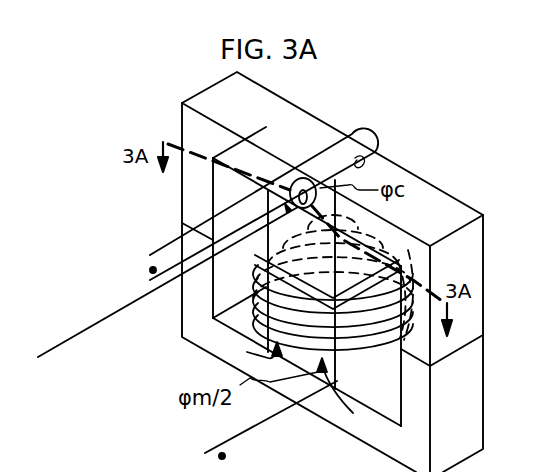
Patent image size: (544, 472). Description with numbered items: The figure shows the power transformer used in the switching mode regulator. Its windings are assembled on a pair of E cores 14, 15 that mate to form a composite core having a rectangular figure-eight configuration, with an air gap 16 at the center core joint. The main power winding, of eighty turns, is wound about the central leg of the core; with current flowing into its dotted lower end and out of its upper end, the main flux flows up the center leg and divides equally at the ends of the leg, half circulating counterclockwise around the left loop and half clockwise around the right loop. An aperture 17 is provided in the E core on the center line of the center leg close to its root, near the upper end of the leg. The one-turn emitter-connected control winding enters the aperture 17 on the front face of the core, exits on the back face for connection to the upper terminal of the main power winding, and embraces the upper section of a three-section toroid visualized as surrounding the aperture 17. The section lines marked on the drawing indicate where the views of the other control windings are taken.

The E core 14 is at (486, 253).
The E core 15 is at (486, 393).
The air gap 16 is at (365, 292).
The aperture 17 is at (295, 181).